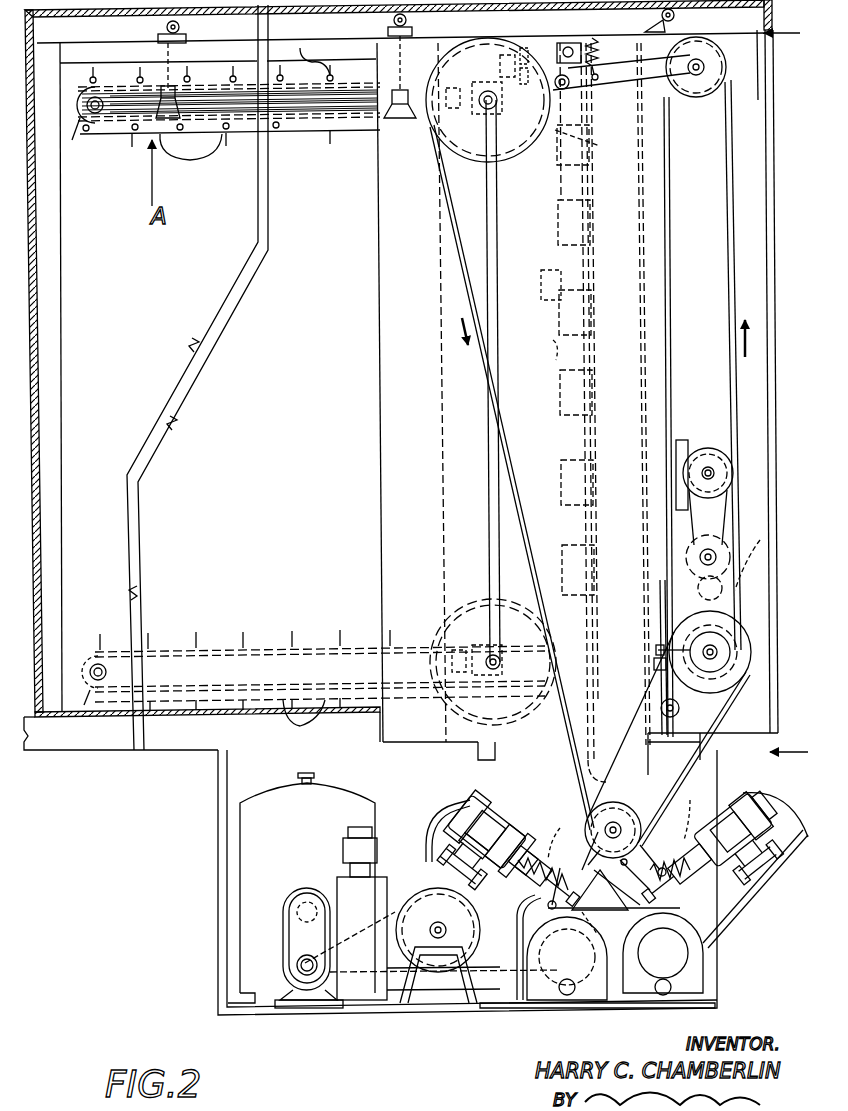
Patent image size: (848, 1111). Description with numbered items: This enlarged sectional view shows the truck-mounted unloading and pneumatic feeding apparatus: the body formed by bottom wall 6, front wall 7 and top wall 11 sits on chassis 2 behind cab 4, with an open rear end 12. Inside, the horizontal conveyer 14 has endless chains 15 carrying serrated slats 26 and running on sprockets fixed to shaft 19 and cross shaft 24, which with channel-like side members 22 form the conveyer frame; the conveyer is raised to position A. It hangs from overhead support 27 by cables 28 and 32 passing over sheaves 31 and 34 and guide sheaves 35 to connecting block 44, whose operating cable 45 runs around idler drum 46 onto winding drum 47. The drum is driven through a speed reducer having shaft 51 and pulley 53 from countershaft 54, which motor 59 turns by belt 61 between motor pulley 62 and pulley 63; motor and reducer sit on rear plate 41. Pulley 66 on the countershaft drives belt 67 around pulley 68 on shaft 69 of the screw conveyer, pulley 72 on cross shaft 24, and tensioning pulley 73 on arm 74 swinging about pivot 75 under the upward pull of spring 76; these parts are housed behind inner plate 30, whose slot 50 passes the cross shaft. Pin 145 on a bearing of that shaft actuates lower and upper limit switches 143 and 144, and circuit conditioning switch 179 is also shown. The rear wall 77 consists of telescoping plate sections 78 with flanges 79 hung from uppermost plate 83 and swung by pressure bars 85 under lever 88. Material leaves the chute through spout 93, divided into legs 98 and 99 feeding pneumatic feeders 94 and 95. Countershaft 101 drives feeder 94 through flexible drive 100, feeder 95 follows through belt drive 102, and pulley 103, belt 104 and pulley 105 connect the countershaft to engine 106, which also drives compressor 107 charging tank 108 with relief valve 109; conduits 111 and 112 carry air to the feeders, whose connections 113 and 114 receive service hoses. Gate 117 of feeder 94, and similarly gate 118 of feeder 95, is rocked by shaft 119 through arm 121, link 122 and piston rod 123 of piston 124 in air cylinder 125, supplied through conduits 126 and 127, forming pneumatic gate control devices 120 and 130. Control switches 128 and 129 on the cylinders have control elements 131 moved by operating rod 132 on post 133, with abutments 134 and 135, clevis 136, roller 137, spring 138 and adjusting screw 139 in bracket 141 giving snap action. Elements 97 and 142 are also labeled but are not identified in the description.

The chassis 2 is at (62, 766).
The cab 4 is at (786, 378).
The bottom wall 6 is at (158, 718).
The front wall 7 is at (45, 303).
The top wall 11 is at (96, 21).
The open rear end 12 is at (771, 80).
The conveyer 14 is at (303, 138).
The endless chain 15 is at (238, 135).
The shaft 19 is at (86, 105).
The side member 22 is at (112, 136).
The cross shaft 24 is at (486, 110).
The slats 26 is at (205, 148).
The overhead support 27 is at (85, 48).
The cable 28 is at (165, 68).
The inner wall member or plate 30 is at (395, 467).
The sheaves 31 is at (186, 31).
The cable 32 is at (390, 72).
The sheaves 34 is at (410, 23).
The guide sheaves 35 is at (662, 20).
The rear plate 41 is at (644, 313).
The connecting block 44 is at (654, 663).
The operating cable 45 is at (660, 690).
The idler drum 46 is at (660, 710).
The winding drum 47 is at (698, 590).
The slot or opening 50 is at (487, 502).
The shaft 51 is at (708, 547).
The pulley 53 is at (736, 540).
The countershaft 54 is at (690, 649).
The motor 59 is at (709, 448).
The belt 61 is at (728, 493).
The motor pulley 62 is at (716, 463).
The pulley 63 is at (748, 673).
The pulley 66 is at (736, 653).
The belt 67 is at (733, 276).
The pulley 68 is at (614, 792).
The shaft 69 is at (650, 794).
The pulley 72 is at (486, 160).
The pulley 73 is at (716, 61).
The arm 74 is at (655, 80).
The pivot 75 is at (575, 92).
The spring 76 is at (599, 55).
The rear wall 77 is at (538, 299).
The telescoping plate sections 78 is at (583, 257).
The flange 79 is at (557, 357).
The uppermost telescoping plate section 83 is at (565, 195).
The pressure bars 85 is at (592, 301).
The lever 88 is at (760, 541).
The discharge spout 93 is at (646, 847).
The feeder 94 is at (585, 142).
The feeder 95 is at (702, 981).
The lower housing 97 is at (366, 1019).
The leg 98 is at (605, 893).
The leg 99 is at (626, 887).
The flexible drive 100 is at (516, 931).
The countershaft 101 is at (439, 921).
The belt drive 102 is at (640, 1006).
The pulley 103 is at (396, 944).
The belt 104 is at (368, 925).
The pulley 105 is at (307, 990).
The engine 106 is at (263, 896).
The compressor 107 is at (300, 942).
The receiving tank 108 is at (388, 881).
The pressure relief valve 109 is at (372, 853).
The conduit 111 is at (440, 1004).
The conduit 112 is at (460, 986).
The connection 113 is at (569, 998).
The connection 114 is at (672, 997).
The gate 117 is at (596, 873).
The gate 118 is at (620, 873).
The shaft 119 is at (549, 849).
The pneumatic gate control device 120 is at (475, 798).
The arm 121 is at (598, 853).
The link 122 is at (546, 929).
The piston rod 123 is at (530, 869).
The piston 124 is at (655, 851).
The air cylinder 125 is at (478, 797).
The conduit 126 is at (438, 819).
The conduit 127 is at (760, 909).
The control switch 128 is at (486, 853).
The control switch 129 is at (772, 813).
The pneumatic gate control device 130 is at (760, 793).
The control lever or element 131 is at (470, 873).
The switch operating rod 132 is at (504, 887).
The post 133 is at (552, 894).
The abutment 134 is at (592, 863).
The abutment 135 is at (556, 911).
The clevis or yoke 136 is at (612, 823).
The anti-friction roller 137 is at (586, 919).
The spring 138 is at (542, 823).
The rod or screw 139 is at (526, 813).
The bracket 141 is at (519, 803).
The pin 142 is at (470, 854).
The lower limit switch 143 is at (452, 662).
The upper limit switch 144 is at (450, 106).
The pin 145 is at (462, 110).
The circuit conditioning switch 179 is at (500, 62).